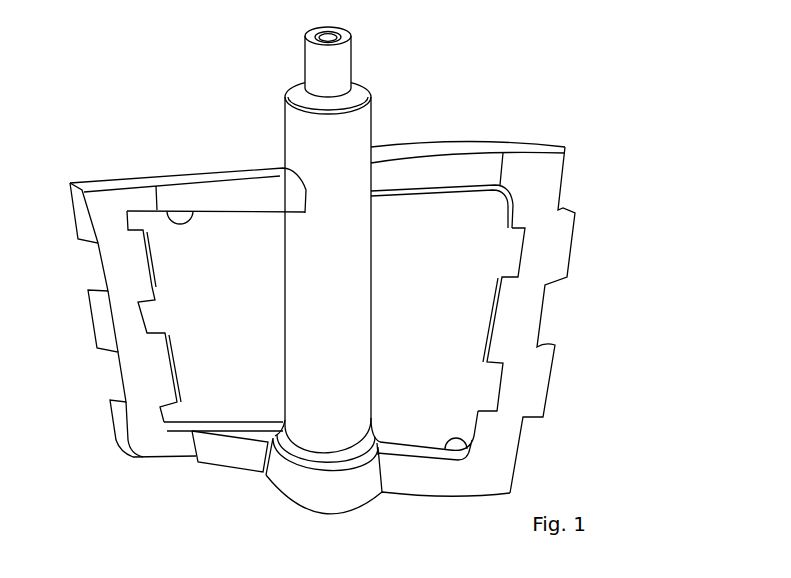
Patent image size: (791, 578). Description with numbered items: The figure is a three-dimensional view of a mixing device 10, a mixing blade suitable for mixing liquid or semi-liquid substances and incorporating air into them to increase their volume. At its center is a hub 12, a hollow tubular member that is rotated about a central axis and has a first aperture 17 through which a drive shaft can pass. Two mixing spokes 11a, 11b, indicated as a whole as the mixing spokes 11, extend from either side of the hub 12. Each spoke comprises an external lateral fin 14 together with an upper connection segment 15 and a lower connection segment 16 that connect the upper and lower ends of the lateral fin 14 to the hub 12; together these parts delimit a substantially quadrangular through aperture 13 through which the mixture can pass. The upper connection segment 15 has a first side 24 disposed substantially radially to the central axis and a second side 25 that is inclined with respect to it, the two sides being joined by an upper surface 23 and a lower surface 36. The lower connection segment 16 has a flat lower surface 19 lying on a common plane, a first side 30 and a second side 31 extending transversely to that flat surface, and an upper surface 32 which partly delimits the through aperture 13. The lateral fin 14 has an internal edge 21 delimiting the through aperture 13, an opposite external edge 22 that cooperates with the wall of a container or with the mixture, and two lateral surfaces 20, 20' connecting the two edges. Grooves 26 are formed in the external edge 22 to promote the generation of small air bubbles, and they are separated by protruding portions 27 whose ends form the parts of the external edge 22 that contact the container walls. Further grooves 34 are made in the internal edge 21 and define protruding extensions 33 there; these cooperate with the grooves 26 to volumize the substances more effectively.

The mixing device 10 is at (471, 54).
The mixing spokes 11 is at (122, 154).
The mixing spoke 11a is at (120, 467).
The mixing spoke 11b is at (590, 226).
The hub 12 is at (300, 143).
The through aperture 13 is at (173, 212).
The external lateral fin 14 is at (99, 202).
The upper connection segment 15 is at (228, 197).
The lower connection segment 16 is at (252, 470).
The first aperture 17 is at (300, 514).
The flat lower surface 19 is at (208, 462).
The lateral surface 20 is at (81, 343).
The lateral surface 20' is at (542, 433).
The internal edge 21 is at (156, 281).
The external edge 22 is at (90, 300).
The upper surface 23 is at (207, 178).
The first side 24 is at (412, 174).
The second side 25 is at (245, 201).
The grooves 26 is at (100, 268).
The protruding portions 27 is at (68, 216).
The first side 30 is at (403, 481).
The second side 31 is at (238, 456).
The upper surface 32 is at (253, 430).
The protruding extensions 33 is at (158, 263).
The further grooves 34 is at (148, 313).
The lower surface 36 is at (438, 192).